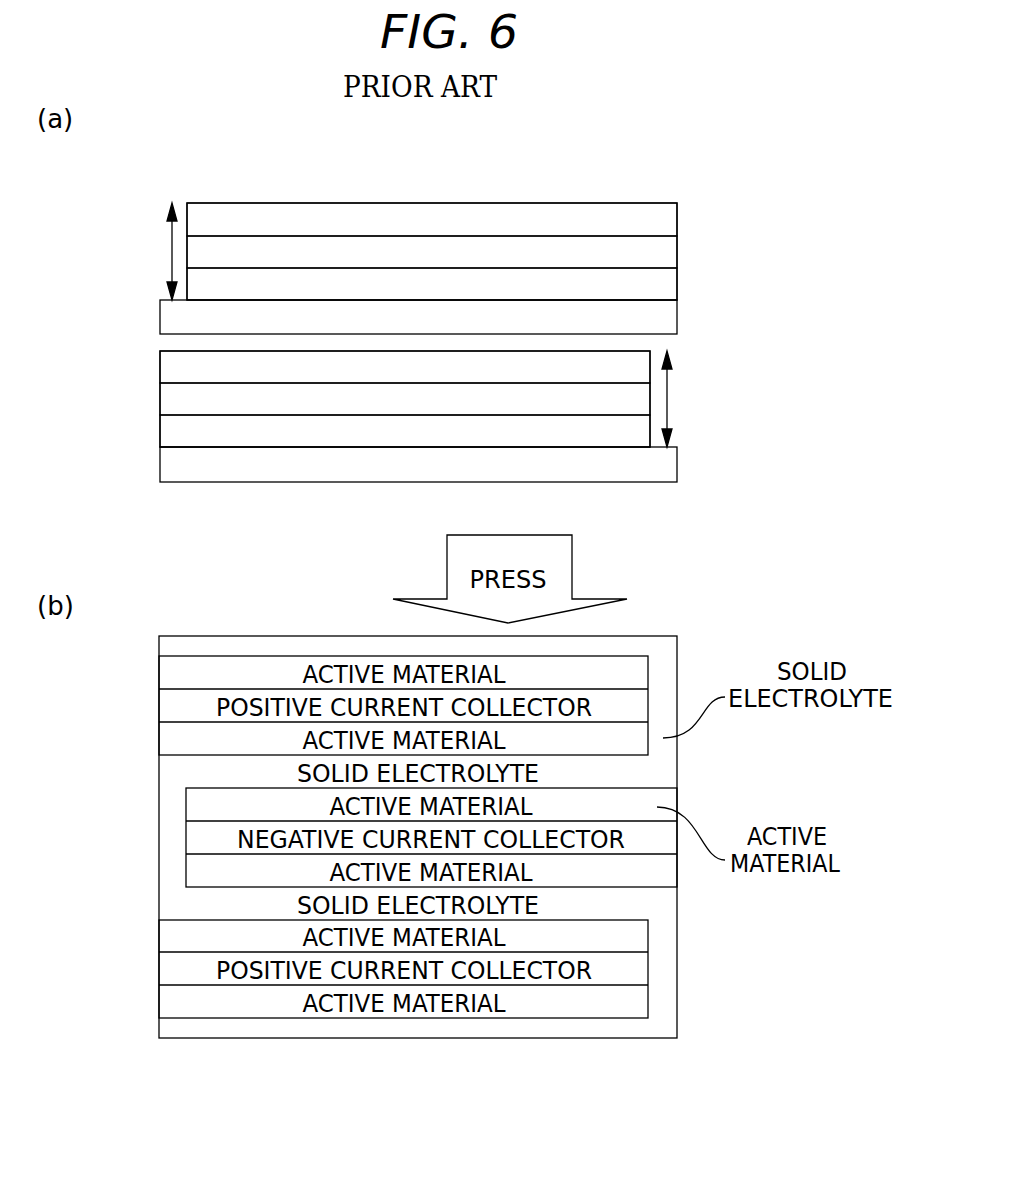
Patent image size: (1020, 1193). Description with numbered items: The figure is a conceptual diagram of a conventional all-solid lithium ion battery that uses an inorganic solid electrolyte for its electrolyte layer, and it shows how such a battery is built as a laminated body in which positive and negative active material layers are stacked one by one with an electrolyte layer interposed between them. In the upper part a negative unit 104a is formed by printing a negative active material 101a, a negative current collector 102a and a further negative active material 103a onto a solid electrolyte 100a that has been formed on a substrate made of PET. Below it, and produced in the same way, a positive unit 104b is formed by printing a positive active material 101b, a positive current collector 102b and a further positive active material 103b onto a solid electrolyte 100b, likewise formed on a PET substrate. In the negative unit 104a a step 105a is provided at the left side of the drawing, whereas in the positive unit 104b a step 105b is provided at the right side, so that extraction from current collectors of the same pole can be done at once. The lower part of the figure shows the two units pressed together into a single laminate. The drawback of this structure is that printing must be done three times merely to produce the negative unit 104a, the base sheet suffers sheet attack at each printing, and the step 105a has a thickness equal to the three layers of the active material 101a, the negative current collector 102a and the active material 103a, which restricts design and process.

The solid electrolyte 100a is at (173, 320).
The solid electrolyte 100b is at (172, 470).
The negative active material 101a is at (664, 283).
The positive active material 101b is at (172, 435).
The negative current collector 102a is at (664, 250).
The positive current collector 102b is at (172, 402).
The negative active material 103a is at (210, 203).
The positive active material 103b is at (636, 356).
The negative unit 104a is at (705, 220).
The positive unit 104b is at (710, 445).
The step 105a is at (167, 240).
The step 105b is at (668, 410).